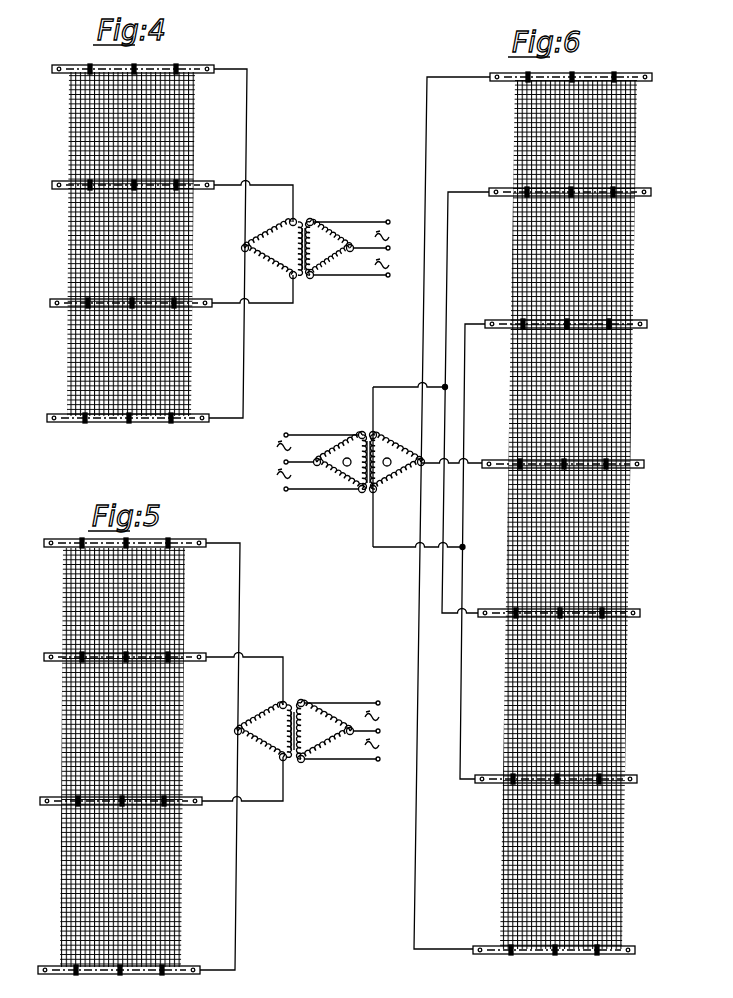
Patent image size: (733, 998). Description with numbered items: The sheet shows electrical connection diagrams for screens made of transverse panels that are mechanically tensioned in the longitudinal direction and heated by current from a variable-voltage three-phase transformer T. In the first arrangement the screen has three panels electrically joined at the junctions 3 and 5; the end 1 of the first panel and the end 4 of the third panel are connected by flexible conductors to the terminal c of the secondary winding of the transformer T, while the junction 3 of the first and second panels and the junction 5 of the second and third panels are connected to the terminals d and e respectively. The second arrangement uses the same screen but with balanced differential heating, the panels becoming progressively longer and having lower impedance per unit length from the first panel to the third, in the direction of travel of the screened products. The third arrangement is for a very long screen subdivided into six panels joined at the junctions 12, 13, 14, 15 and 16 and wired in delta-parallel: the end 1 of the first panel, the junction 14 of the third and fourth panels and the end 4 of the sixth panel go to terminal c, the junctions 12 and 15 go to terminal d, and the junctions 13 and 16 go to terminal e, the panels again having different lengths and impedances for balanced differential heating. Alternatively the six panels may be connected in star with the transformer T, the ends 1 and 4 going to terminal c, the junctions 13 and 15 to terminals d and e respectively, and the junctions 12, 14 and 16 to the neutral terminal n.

In FIG. 4, the end of the first panel 1 is at (119, 69).
In FIG. 5, the end of the first panel 1 is at (112, 543).
In FIG. 6, the end of the first panel 1 is at (654, 78).
In FIG. 4, the junction of the first and second panels 3 is at (119, 185).
In FIG. 5, the junction of the first and second panels 3 is at (112, 657).
In FIG. 4, the junction of the second and third panels 5 is at (117, 303).
In FIG. 5, the junction of the second and third panels 5 is at (109, 801).
In FIG. 4, the end of the third panel 4 is at (114, 418).
In FIG. 5, the end of the third panel 4 is at (107, 970).
In FIG. 6, the end of the third panel 4 is at (638, 951).
In FIG. 6, the junction of the first and second panels 12 is at (654, 194).
In FIG. 6, the junction of the second and third panels 13 is at (650, 326).
In FIG. 6, the junction of the third and fourth panels 14 is at (647, 466).
In FIG. 6, the junction of the fourth and fifth panels 15 is at (643, 615).
In FIG. 6, the junction of the fifth and sixth panels 16 is at (640, 781).
In FIG. 4, the terminal of the secondary winding c is at (242, 252).
In FIG. 5, the terminal of the secondary winding c is at (234, 737).
In FIG. 6, the terminal of the secondary winding c is at (423, 466).
In FIG. 4, the terminal of the secondary winding d is at (296, 218).
In FIG. 5, the terminal of the secondary winding d is at (286, 701).
In FIG. 6, the terminal of the secondary winding d is at (376, 432).
In FIG. 4, the terminal of the secondary winding e is at (290, 279).
In FIG. 5, the terminal of the secondary winding e is at (279, 761).
In FIG. 6, the terminal of the secondary winding e is at (370, 493).
In FIG. 6, the neutral terminal n is at (395, 463).
In FIG. 4, the transformer T is at (316, 237).
In FIG. 5, the transformer T is at (308, 722).
In FIG. 6, the transformer T is at (350, 449).